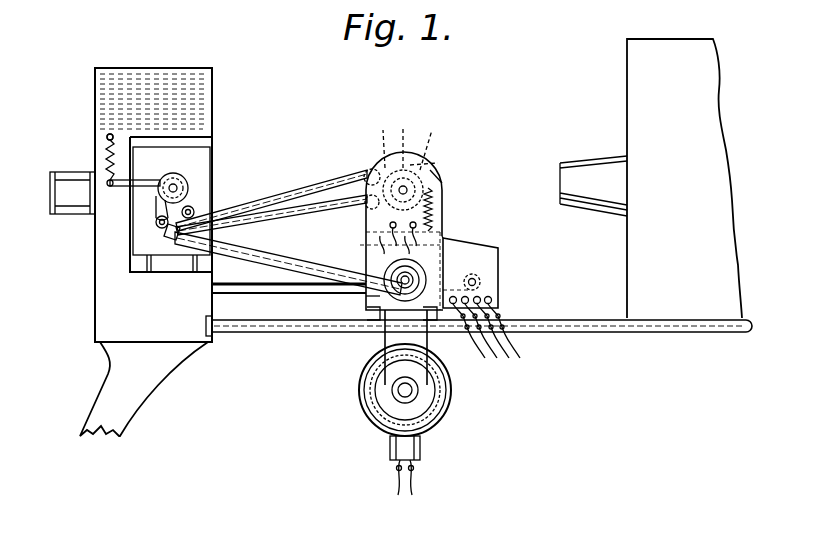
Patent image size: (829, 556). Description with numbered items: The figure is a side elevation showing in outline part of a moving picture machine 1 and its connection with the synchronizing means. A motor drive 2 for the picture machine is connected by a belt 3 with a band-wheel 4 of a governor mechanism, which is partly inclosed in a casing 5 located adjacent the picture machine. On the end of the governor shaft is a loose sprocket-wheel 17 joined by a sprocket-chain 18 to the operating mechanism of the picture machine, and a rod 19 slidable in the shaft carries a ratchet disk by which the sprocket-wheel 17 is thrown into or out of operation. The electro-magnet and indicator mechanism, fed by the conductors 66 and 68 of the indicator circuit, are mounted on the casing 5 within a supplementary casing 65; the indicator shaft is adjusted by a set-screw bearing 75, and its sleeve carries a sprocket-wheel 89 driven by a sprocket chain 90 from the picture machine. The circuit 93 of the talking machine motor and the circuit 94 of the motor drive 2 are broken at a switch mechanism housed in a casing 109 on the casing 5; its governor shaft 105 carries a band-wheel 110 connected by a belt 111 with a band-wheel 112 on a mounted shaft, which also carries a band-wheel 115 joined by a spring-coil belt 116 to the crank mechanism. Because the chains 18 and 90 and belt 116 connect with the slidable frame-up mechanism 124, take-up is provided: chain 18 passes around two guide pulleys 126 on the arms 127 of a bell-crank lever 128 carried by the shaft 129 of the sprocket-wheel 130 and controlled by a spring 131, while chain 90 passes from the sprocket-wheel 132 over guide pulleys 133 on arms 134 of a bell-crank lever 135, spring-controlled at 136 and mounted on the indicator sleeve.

The moving picture machine 1 is at (401, 237).
The motor drive 2 is at (413, 402).
The belt 3 is at (366, 370).
The band-wheel 4 is at (440, 275).
The casing 5 is at (372, 248).
The sprocket-wheel 17 is at (398, 292).
The sprocket-chain 18 is at (278, 262).
The rod 19 is at (468, 283).
The supplementary casing 65 is at (438, 163).
The conductor 66 is at (392, 232).
The conductor 68 is at (443, 242).
The set-screw bearing 75 is at (404, 187).
The sprocket-wheel 89 is at (425, 165).
The sprocket chain 90 is at (364, 178).
The circuit 93 is at (505, 358).
The circuit 94 is at (415, 470).
The shaft 105 is at (478, 288).
The casing 109 is at (488, 274).
The band-wheel 110 is at (499, 250).
The belt 111 is at (463, 250).
The band-wheel 112 is at (312, 282).
The band-wheel 115 is at (372, 291).
The belt 116 is at (310, 298).
The slidable frame-up mechanism 124 is at (178, 188).
The guide pulleys 126 is at (160, 226).
The arms 127 is at (182, 214).
The bell-crank lever 128 is at (160, 194).
The shaft 129 is at (190, 176).
The sprocket-wheel 130 is at (150, 196).
The spring 131 is at (115, 136).
The sprocket-wheel 132 is at (172, 240).
The guide pulleys 133 is at (371, 170).
The arms 134 is at (388, 150).
The bell-crank lever 135 is at (445, 183).
The spring 136 is at (440, 207).